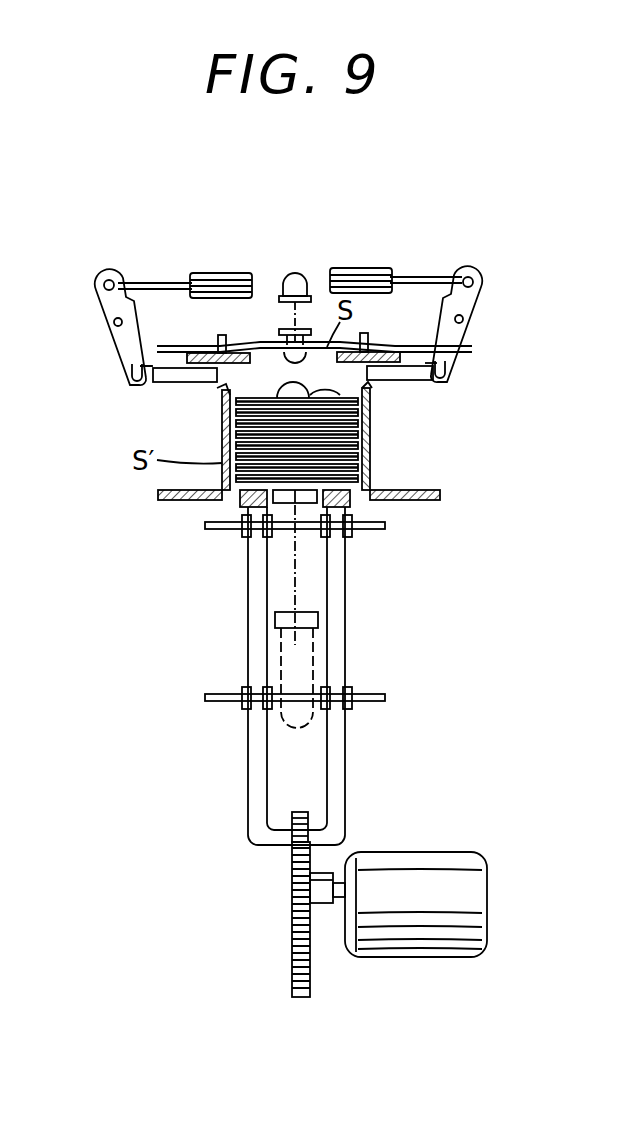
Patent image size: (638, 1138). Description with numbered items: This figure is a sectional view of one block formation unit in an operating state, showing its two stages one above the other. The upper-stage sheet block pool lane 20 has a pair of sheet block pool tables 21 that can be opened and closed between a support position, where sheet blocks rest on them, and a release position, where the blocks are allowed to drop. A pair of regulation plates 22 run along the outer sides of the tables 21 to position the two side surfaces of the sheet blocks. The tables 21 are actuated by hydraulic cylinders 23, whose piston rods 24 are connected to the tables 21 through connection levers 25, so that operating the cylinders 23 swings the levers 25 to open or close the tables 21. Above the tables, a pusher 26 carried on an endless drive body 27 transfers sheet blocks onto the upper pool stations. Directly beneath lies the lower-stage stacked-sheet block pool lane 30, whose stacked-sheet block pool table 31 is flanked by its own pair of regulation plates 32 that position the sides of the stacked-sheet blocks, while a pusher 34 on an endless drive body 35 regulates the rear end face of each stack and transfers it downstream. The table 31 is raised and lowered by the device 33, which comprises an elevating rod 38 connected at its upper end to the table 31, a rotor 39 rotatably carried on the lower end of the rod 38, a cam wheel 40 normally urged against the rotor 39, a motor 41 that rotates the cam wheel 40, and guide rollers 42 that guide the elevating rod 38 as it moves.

The upper-stage sheet block pool lane 20 is at (514, 262).
The sheet block pool tables 21 is at (157, 346).
The regulation plates 22 is at (217, 337).
The hydraulic cylinders 23 is at (205, 273).
The piston rods 24 is at (152, 282).
The connection levers 25 is at (110, 332).
The pusher 26 is at (300, 272).
The endless drive body 27 is at (292, 320).
The lower-stage stacked-sheet block pool lane 30 is at (299, 436).
The stacked-sheet block pool table 31 is at (367, 500).
The regulation plates 32 is at (222, 430).
The device for moving the table upward and downward 33 is at (343, 615).
The pusher 34 is at (370, 390).
The endless drive body 35 is at (295, 562).
The elevating rod 38 is at (252, 640).
The rotor 39 is at (308, 818).
The cam wheel 40 is at (302, 932).
The motor 41 is at (413, 947).
The guide rollers 42 is at (242, 537).